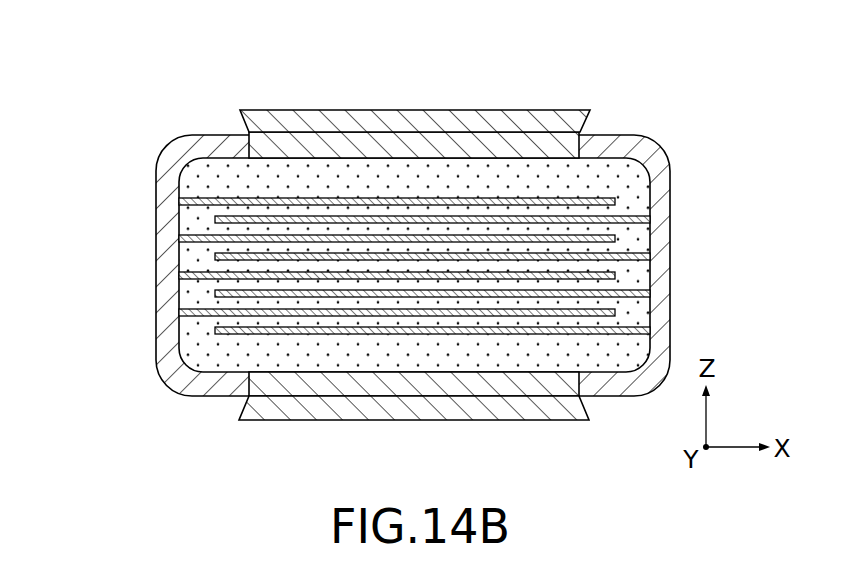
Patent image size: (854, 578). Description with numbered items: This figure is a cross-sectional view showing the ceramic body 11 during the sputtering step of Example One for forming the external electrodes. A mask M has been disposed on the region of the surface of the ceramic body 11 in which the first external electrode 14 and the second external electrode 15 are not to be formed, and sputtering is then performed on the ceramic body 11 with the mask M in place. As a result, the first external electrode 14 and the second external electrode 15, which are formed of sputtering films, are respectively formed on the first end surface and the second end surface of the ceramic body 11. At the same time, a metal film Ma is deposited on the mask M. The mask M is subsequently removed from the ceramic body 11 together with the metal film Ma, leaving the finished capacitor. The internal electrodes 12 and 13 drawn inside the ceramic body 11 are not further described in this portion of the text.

The ceramic body 11 is at (620, 122).
The first internal electrodes 12 is at (179, 311).
The second internal electrodes 13 is at (650, 329).
The first external electrode 14 is at (157, 332).
The second external electrode 15 is at (672, 183).
The mask M is at (387, 133).
The metal film Ma is at (537, 122).